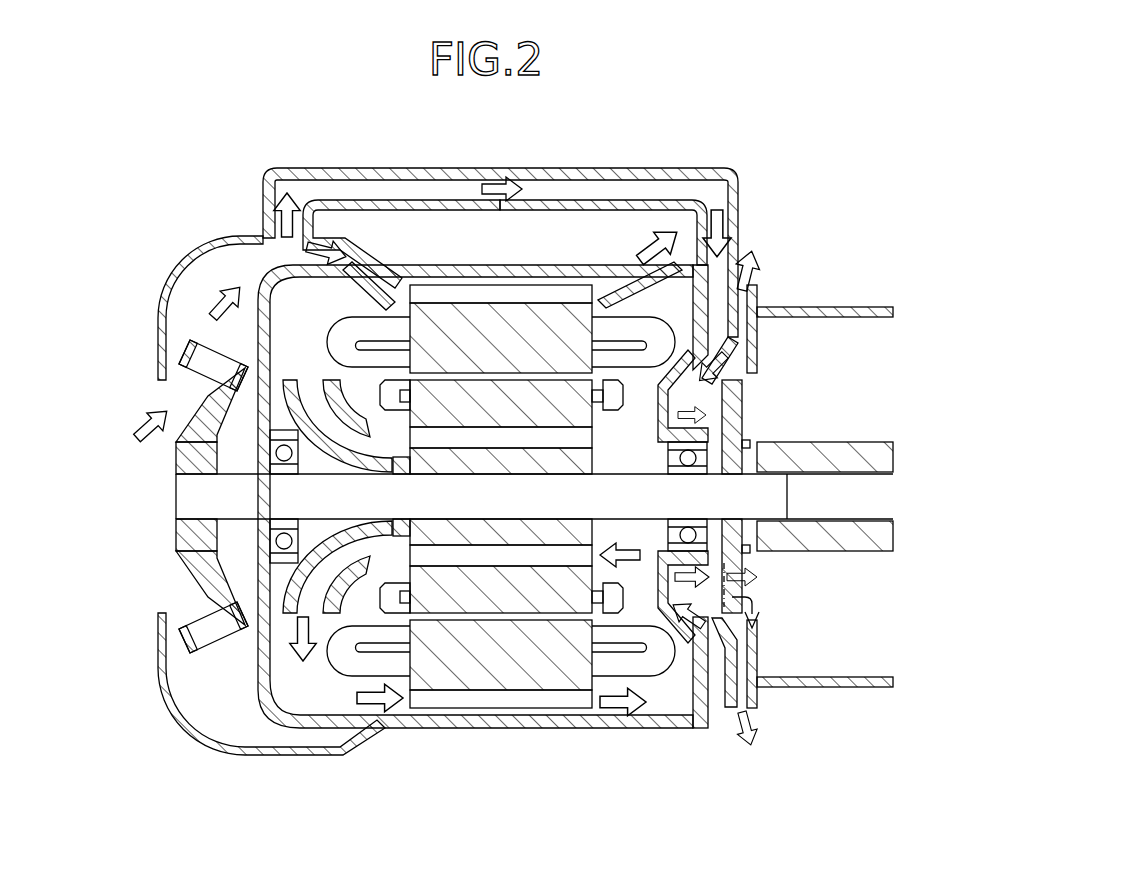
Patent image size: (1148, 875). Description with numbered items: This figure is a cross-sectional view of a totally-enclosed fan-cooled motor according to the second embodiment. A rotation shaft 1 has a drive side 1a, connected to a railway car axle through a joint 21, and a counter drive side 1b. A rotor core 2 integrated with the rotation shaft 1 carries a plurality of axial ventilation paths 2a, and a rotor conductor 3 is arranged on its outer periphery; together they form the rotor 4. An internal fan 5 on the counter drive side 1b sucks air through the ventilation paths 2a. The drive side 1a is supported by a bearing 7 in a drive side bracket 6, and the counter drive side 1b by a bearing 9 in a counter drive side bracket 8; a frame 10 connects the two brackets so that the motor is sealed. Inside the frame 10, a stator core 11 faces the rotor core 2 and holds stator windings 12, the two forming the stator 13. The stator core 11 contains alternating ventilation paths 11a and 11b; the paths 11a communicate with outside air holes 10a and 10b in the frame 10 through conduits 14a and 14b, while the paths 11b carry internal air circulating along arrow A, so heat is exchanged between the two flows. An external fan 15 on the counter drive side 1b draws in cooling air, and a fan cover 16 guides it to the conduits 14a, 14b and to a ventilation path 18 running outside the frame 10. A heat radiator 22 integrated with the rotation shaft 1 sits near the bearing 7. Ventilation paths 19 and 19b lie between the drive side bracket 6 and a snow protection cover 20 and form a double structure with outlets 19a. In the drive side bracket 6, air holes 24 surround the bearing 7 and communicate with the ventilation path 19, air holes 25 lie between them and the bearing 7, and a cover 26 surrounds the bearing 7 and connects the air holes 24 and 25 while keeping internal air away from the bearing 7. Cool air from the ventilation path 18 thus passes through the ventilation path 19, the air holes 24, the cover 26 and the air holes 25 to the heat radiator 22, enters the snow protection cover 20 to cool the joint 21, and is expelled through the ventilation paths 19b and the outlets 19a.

The rotation shaft 1 is at (614, 472).
The drive side 1a is at (790, 505).
The counter drive side 1b is at (176, 503).
The rotor core 2 is at (595, 573).
The ventilation paths 2a is at (432, 556).
The rotor conductor 3 is at (690, 662).
The rotor 4 is at (617, 546).
The internal fan 5 is at (225, 595).
The drive side bracket 6 is at (708, 337).
The bearing 7 is at (653, 463).
The counter drive side bracket 8 is at (261, 293).
The bearing 9 is at (313, 458).
The frame 10 is at (445, 727).
The outside air hole 10a is at (357, 262).
The outside air hole 10b is at (633, 262).
The stator core 11 is at (592, 676).
The ventilation paths 11a is at (435, 303).
The ventilation paths 11b is at (541, 697).
The stator windings 12 is at (333, 664).
The stator 13 is at (705, 810).
The conduit 14a is at (363, 290).
The conduit 14b is at (614, 300).
The external fan 15 is at (210, 343).
The fan cover 16 is at (262, 760).
The ventilation path 18 is at (512, 168).
The ventilation path 19 is at (718, 297).
The outlets 19a is at (750, 712).
The ventilation paths 19b is at (750, 300).
The snow protection cover 20 is at (848, 307).
The joint 21 is at (848, 443).
The heat radiator 22 is at (748, 424).
The air holes 24 is at (742, 368).
The air holes 25 is at (742, 400).
The cover 26 is at (658, 399).